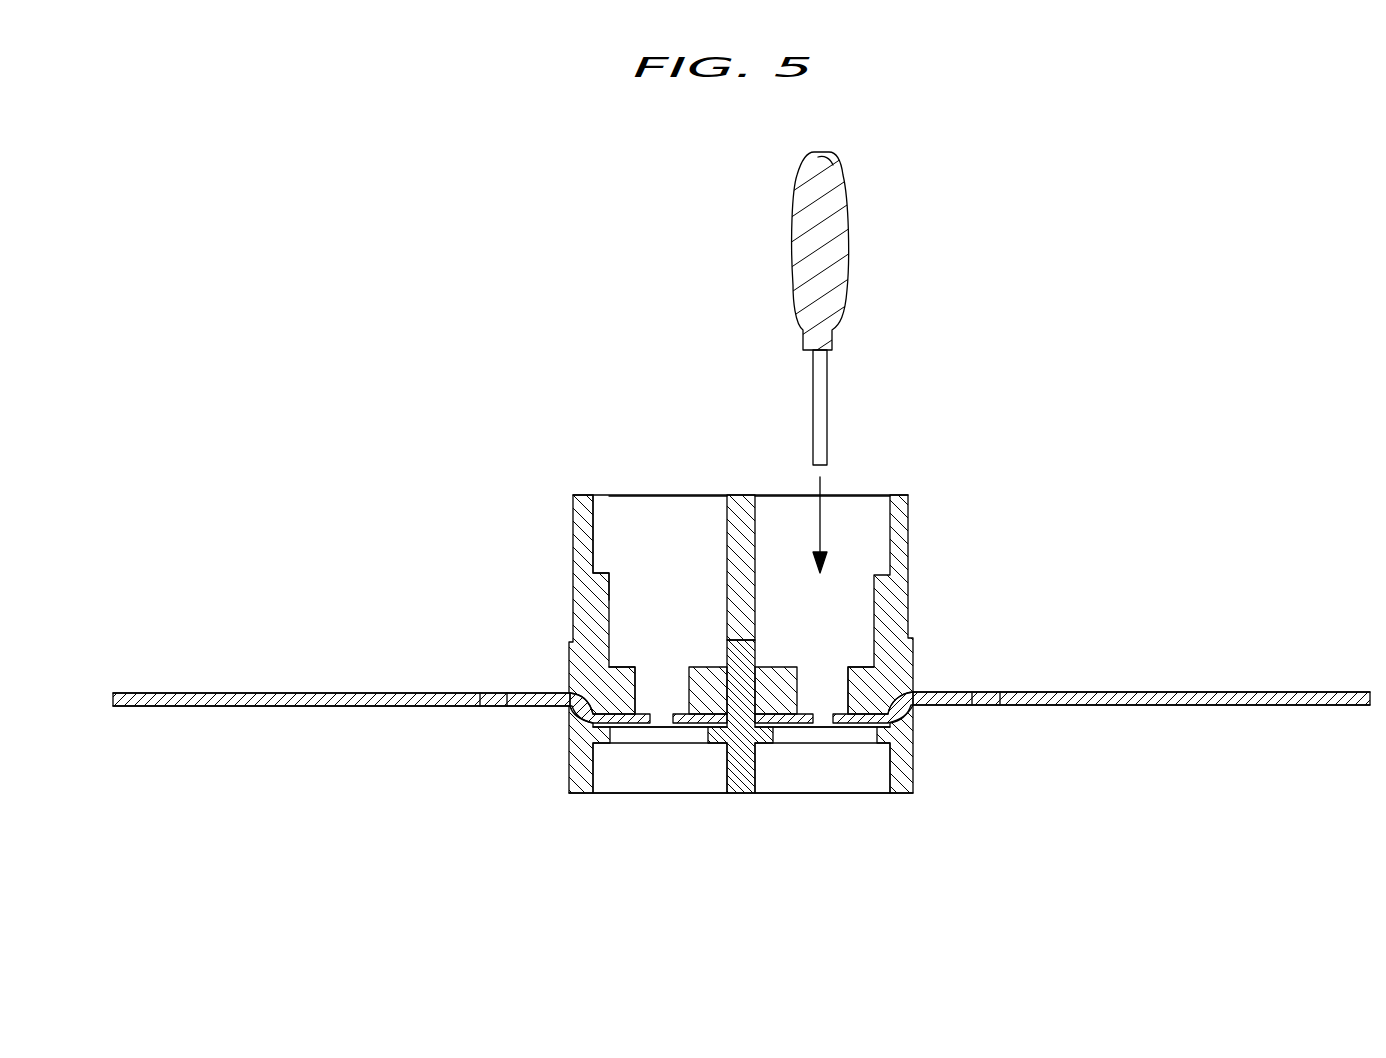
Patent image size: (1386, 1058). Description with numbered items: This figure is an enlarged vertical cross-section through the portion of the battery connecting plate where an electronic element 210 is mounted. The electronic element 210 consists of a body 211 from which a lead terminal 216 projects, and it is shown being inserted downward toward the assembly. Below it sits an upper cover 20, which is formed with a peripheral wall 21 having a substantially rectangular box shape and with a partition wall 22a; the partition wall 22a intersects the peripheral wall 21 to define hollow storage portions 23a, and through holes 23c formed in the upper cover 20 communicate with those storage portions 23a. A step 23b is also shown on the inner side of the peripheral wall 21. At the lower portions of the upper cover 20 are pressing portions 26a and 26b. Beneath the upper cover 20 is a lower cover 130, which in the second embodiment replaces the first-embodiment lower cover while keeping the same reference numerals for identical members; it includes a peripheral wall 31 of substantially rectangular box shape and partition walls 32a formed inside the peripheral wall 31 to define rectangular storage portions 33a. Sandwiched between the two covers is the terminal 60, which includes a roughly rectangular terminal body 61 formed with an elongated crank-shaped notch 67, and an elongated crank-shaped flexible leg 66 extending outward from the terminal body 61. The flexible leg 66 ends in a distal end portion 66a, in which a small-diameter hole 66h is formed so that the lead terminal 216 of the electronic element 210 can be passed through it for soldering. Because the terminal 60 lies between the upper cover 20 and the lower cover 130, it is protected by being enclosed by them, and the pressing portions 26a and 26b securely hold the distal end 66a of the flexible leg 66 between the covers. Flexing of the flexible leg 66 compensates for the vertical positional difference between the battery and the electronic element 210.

The upper cover 20 is at (741, 543).
The peripheral wall 21 is at (741, 543).
The partition wall 22a is at (738, 494).
The storage portion 23a is at (785, 512).
The inner wall step 23b is at (614, 503).
The through hole 23c is at (657, 722).
The pressing portion 26a is at (623, 660).
The pressing portion 26b is at (712, 657).
The peripheral wall 31 is at (795, 781).
The partition wall 32a is at (745, 778).
The storage portion 33a is at (637, 778).
The terminal 60 is at (741, 738).
The terminal body 61 is at (362, 693).
The flexible leg 66 is at (526, 712).
The distal end portion 66a is at (893, 698).
The hole 66h is at (665, 682).
The notch 67 is at (495, 698).
The lower cover 130 is at (744, 647).
The electronic element 210 is at (830, 304).
The body 211 is at (793, 258).
The lead terminal 216 is at (828, 381).